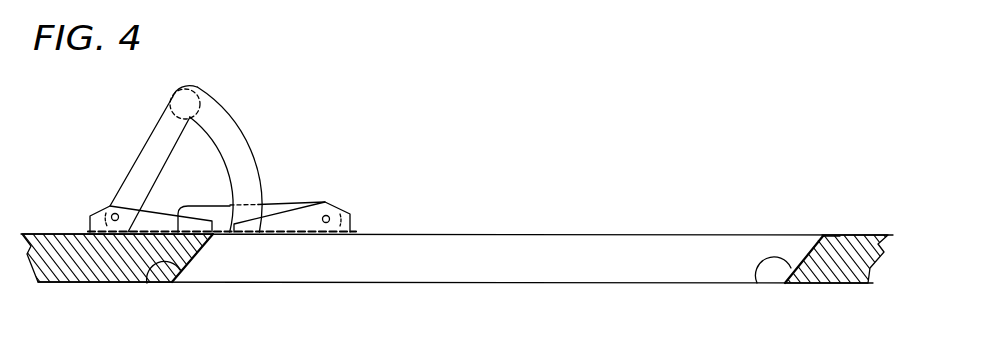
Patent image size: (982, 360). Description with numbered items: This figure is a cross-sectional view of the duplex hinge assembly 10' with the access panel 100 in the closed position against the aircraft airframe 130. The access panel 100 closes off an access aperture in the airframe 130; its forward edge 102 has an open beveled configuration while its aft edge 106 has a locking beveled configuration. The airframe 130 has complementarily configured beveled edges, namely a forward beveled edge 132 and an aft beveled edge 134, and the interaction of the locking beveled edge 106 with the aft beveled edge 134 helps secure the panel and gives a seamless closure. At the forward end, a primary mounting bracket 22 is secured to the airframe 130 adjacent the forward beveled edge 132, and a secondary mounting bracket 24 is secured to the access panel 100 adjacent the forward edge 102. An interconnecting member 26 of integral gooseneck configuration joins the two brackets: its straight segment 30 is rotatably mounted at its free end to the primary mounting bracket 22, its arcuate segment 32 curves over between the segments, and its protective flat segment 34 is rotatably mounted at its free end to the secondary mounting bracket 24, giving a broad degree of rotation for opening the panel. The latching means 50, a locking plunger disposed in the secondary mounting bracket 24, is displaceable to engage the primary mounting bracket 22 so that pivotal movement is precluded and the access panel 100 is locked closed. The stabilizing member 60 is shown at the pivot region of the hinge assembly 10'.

The duplex hinge assembly 10' is at (222, 176).
The primary mounting bracket 22 is at (97, 212).
The secondary mounting bracket 24 is at (345, 222).
The interconnecting member 26 is at (194, 134).
The straight segment 30 is at (152, 157).
The arcuate segment 32 is at (218, 120).
The protective flat segment 34 is at (278, 200).
The latching means 50 is at (213, 212).
The stabilizing member 60 is at (188, 102).
The access panel 100 is at (524, 269).
The forward edge 102 is at (180, 283).
The aft edge 106 is at (757, 284).
The airframe 130 is at (116, 265).
The forward beveled edge 132 is at (147, 283).
The aft beveled edge 134 is at (826, 237).